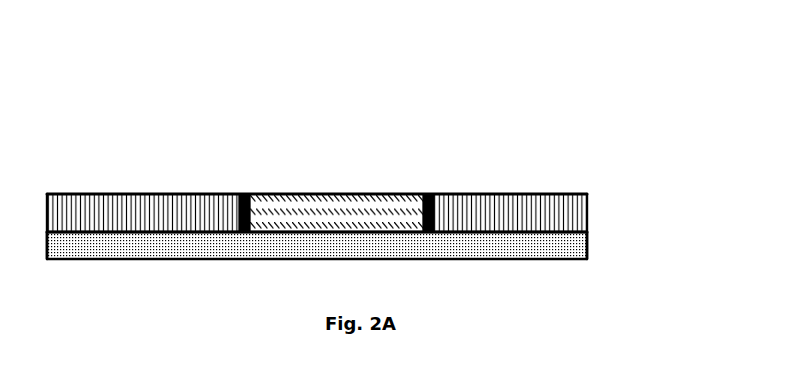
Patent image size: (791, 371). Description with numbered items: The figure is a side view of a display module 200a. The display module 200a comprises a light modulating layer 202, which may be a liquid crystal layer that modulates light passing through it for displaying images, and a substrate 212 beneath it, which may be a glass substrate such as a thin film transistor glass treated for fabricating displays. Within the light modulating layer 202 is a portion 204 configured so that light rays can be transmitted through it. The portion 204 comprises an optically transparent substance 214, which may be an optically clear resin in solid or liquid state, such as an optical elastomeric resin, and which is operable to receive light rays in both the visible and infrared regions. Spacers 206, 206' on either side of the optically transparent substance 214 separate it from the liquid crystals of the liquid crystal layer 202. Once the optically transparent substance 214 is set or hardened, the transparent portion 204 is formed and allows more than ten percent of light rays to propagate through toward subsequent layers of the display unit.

The display module 200a is at (537, 70).
The light modulating layer 202 is at (602, 194).
The portion 204 is at (424, 168).
The spacer 206 is at (470, 168).
The spacer 206' is at (196, 187).
The substrate 212 is at (549, 245).
The optically transparent substance 214 is at (361, 220).